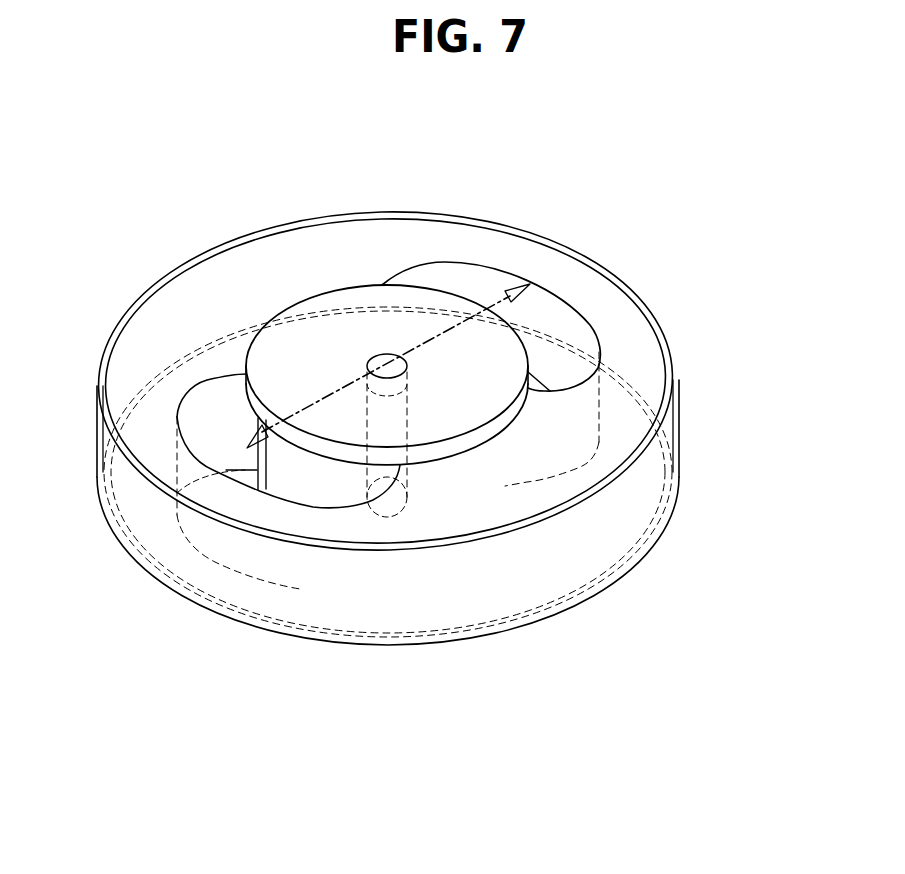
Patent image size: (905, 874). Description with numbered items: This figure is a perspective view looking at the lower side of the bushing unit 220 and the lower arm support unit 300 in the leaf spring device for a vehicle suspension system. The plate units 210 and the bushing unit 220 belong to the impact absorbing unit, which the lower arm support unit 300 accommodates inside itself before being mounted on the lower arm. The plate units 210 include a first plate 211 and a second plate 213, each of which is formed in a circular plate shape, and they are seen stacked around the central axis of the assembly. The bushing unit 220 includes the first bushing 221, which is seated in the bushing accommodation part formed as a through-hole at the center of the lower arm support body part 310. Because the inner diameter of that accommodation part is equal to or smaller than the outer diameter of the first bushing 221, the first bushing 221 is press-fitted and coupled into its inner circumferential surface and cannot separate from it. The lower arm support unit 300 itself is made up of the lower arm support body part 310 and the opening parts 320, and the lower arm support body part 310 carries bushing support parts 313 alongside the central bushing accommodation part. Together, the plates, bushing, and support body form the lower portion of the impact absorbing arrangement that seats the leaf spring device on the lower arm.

The plate unit 210 is at (151, 165).
The first plate 211 is at (250, 512).
The second plate 213 is at (325, 353).
The bushing unit 220 is at (259, 688).
The first bushing 221 is at (317, 480).
The lower arm support unit 300 is at (436, 390).
The lower arm support body part 310 is at (640, 343).
The bushing support part 313 is at (520, 440).
The opening part 320 is at (558, 294).